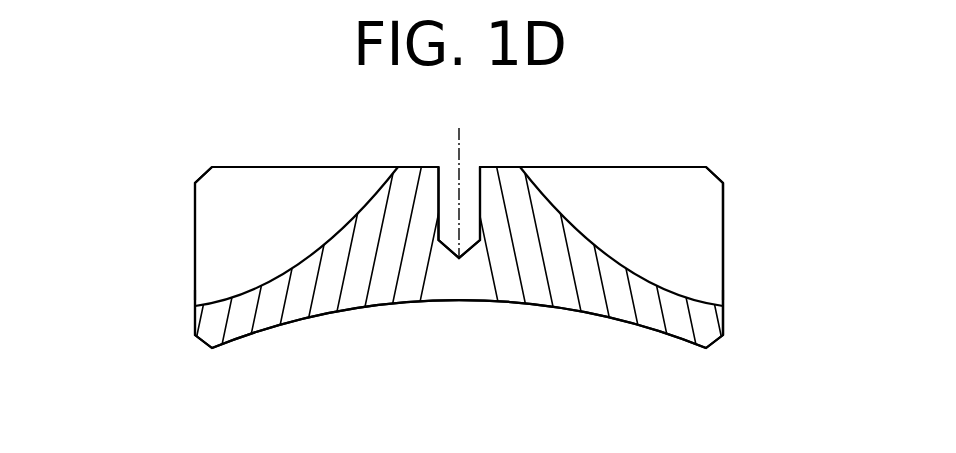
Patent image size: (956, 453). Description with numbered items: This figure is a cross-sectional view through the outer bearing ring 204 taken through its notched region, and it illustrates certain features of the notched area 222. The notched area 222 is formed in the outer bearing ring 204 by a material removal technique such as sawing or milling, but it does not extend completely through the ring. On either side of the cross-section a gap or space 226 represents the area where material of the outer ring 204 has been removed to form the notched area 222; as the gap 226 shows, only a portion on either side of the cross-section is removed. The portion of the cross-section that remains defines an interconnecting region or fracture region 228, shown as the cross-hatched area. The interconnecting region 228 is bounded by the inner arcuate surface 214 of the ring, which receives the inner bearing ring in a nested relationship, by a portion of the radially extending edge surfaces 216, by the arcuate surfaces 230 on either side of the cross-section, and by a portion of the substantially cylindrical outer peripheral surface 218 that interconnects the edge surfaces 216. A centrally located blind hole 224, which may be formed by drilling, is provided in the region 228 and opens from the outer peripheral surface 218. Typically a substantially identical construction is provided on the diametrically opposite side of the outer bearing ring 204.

The outer bearing ring 204 is at (180, 150).
The inner arcuate surface 214 is at (580, 310).
The edge surfaces 216 is at (195, 288).
The outer peripheral surface 218 is at (503, 167).
The notched area 222 is at (763, 237).
The blind hole 224 is at (449, 167).
The gap 226 is at (234, 226).
The interconnecting region 228 is at (376, 266).
The arcuate surfaces 230 is at (355, 213).